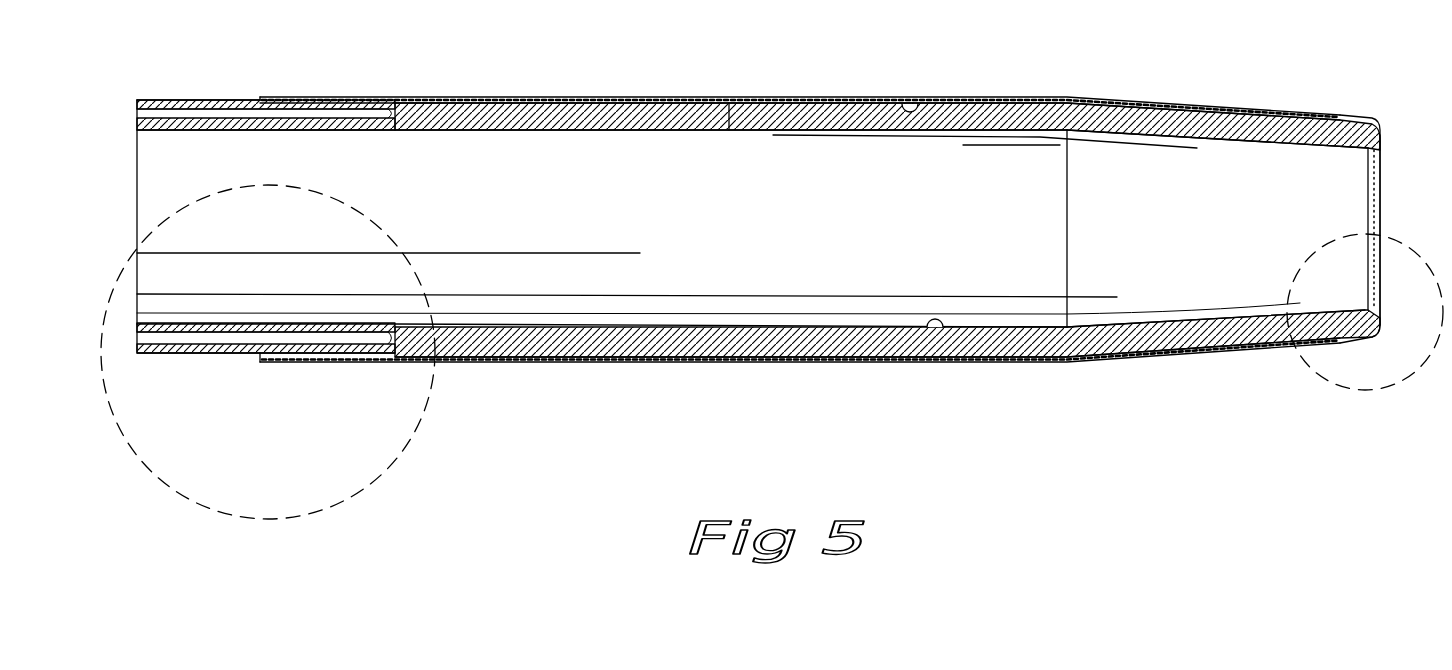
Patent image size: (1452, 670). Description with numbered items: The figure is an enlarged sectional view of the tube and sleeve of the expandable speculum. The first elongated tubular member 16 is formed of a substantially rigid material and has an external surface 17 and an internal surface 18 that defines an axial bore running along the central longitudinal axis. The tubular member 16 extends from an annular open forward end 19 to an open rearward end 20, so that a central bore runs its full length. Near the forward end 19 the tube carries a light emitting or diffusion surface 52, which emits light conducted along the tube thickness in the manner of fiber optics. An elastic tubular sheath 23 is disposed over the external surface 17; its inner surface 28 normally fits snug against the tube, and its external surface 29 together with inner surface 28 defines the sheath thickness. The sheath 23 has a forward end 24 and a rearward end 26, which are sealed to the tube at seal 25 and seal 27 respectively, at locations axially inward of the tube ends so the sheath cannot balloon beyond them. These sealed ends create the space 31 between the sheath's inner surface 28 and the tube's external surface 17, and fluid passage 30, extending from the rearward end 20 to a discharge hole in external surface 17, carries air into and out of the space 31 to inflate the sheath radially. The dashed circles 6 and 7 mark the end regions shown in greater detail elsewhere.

The first elongated tubular member 16 is at (778, 361).
The external surface 17 is at (872, 362).
The internal surface 18 is at (938, 330).
The forward end 19 is at (1380, 180).
The rearward end 20 is at (133, 186).
The elastic tubular sheath 23 is at (760, 98).
The forward end of sheath 24 is at (1333, 120).
The forward seal 25 is at (1337, 147).
The rearward end of sheath 26 is at (279, 96).
The rearward seal 27 is at (300, 95).
The inner surface of sheath 28 is at (899, 101).
The external surface of sheath 29 is at (985, 98).
The fluid passage 30 is at (157, 115).
The space 31 is at (727, 128).
The light emitting surface 52 is at (1368, 212).
The detail circle for FIG. 6 is at (1350, 390).
The detail circle for FIG. 7 is at (322, 512).